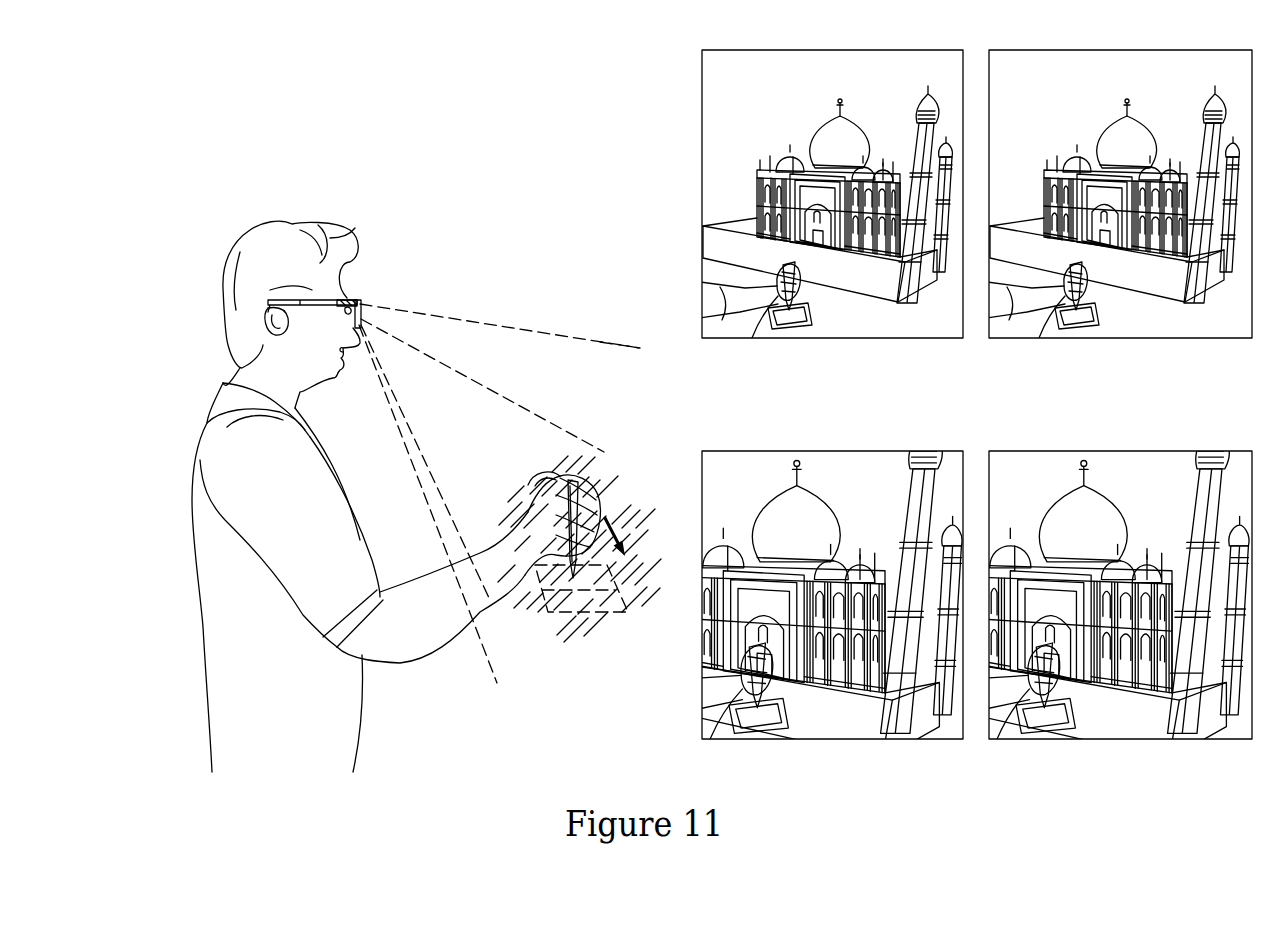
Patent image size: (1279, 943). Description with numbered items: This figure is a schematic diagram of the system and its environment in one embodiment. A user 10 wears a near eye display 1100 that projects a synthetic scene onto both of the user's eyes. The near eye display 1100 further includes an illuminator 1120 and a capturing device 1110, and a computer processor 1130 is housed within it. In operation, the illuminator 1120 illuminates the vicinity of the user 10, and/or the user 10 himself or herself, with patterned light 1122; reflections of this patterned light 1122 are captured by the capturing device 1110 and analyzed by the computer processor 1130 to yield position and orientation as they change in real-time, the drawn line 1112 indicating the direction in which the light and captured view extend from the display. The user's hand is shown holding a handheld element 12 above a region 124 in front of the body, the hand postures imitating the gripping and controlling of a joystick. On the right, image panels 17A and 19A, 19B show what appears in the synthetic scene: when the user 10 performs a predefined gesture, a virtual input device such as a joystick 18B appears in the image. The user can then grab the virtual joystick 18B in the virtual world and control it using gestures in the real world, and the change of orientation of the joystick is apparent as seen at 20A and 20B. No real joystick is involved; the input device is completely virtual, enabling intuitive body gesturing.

The user 10 is at (200, 380).
The near eye display 1100 is at (360, 298).
The computer processor 1130 is at (312, 256).
The capturing device 1110 is at (365, 303).
The illuminator 1120 is at (370, 318).
The display direction arrow 1112 is at (607, 355).
The patterned light 1122 is at (452, 428).
The stylus 12 is at (537, 578).
The input pad / tracked region 124 is at (584, 625).
The displayed image 17A is at (886, 365).
The joystick 18B is at (752, 338).
The zoomed displayed image 19A is at (886, 765).
The change of orientation of the joystick 20A is at (727, 740).
The zoomed displayed image (second view) 19B is at (1176, 765).
The change of orientation of the joystick 20B is at (1017, 740).